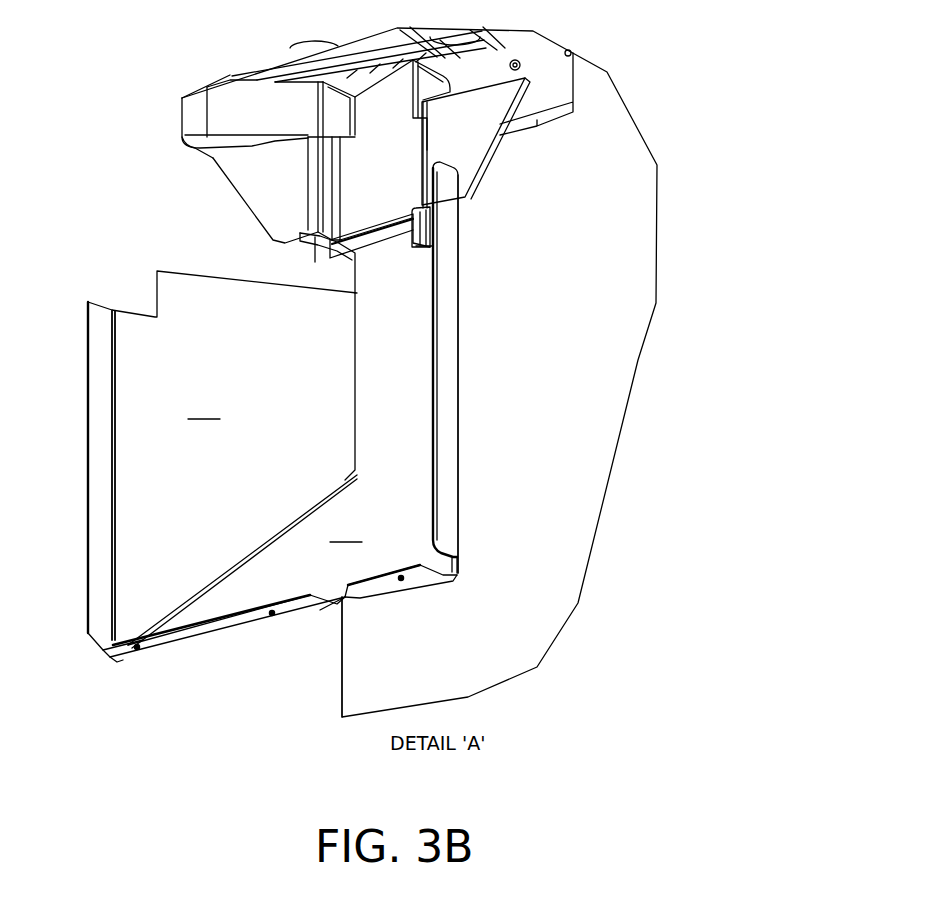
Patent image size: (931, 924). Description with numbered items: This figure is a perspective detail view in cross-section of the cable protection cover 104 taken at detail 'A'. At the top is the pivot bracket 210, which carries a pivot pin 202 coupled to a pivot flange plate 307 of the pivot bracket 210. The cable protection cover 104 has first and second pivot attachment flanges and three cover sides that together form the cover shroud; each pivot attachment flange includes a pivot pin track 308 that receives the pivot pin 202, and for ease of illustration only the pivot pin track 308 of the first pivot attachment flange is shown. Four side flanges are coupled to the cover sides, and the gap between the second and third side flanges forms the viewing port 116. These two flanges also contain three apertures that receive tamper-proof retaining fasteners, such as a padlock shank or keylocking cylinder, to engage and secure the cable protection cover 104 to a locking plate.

The cable protection cover 104 is at (742, 174).
The pivot bracket 210 is at (500, 143).
The pivot flange plate 307 is at (432, 216).
The pivot pin 202 is at (380, 242).
The pivot pin track 308 is at (337, 262).
The viewing port 116 is at (348, 595).